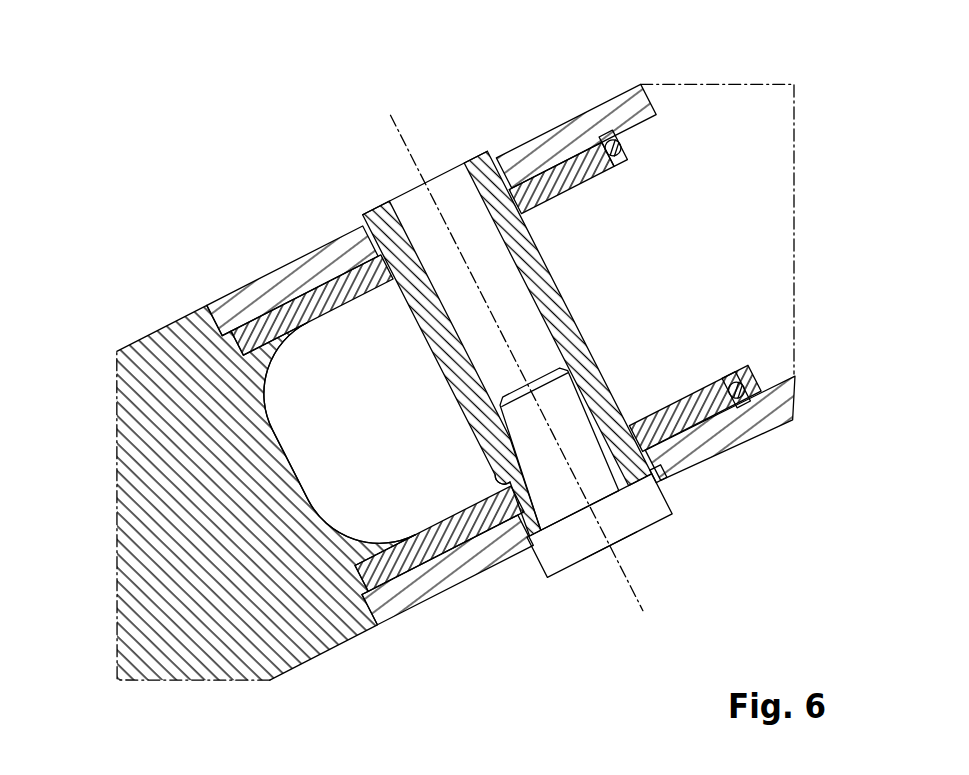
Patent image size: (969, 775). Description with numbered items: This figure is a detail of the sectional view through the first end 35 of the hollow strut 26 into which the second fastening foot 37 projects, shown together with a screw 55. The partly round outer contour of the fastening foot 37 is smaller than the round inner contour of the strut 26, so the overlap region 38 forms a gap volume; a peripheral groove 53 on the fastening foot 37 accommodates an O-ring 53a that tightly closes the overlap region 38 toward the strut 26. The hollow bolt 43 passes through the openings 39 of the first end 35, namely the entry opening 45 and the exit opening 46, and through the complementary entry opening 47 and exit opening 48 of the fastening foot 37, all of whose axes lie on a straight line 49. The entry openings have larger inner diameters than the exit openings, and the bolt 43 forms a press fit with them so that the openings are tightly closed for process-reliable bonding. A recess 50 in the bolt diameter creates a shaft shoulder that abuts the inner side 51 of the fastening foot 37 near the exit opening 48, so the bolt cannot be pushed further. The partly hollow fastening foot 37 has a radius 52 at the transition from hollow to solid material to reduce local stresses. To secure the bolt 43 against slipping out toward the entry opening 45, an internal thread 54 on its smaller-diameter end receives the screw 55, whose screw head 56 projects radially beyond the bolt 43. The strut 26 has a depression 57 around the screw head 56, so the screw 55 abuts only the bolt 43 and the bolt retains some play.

The strut 26 is at (431, 194).
The first end 35 is at (588, 122).
The second fastening foot 37 is at (128, 412).
The overlap region 38 is at (300, 300).
The opening 39 is at (521, 338).
The bolt 43 is at (378, 212).
The entry opening 45 is at (485, 150).
The exit opening 46 is at (527, 556).
The entry opening 47 is at (549, 205).
The exit opening 48 is at (626, 420).
The straight line 49 is at (640, 612).
The recess 50 is at (503, 475).
The inner side 51 is at (412, 542).
The radius 52 is at (352, 545).
The peripheral groove 53 is at (633, 135).
The O-ring 53a is at (612, 152).
The internal thread 54 is at (605, 483).
The screw 55 is at (625, 540).
The screw head 56 is at (581, 548).
The depression 57 is at (663, 477).